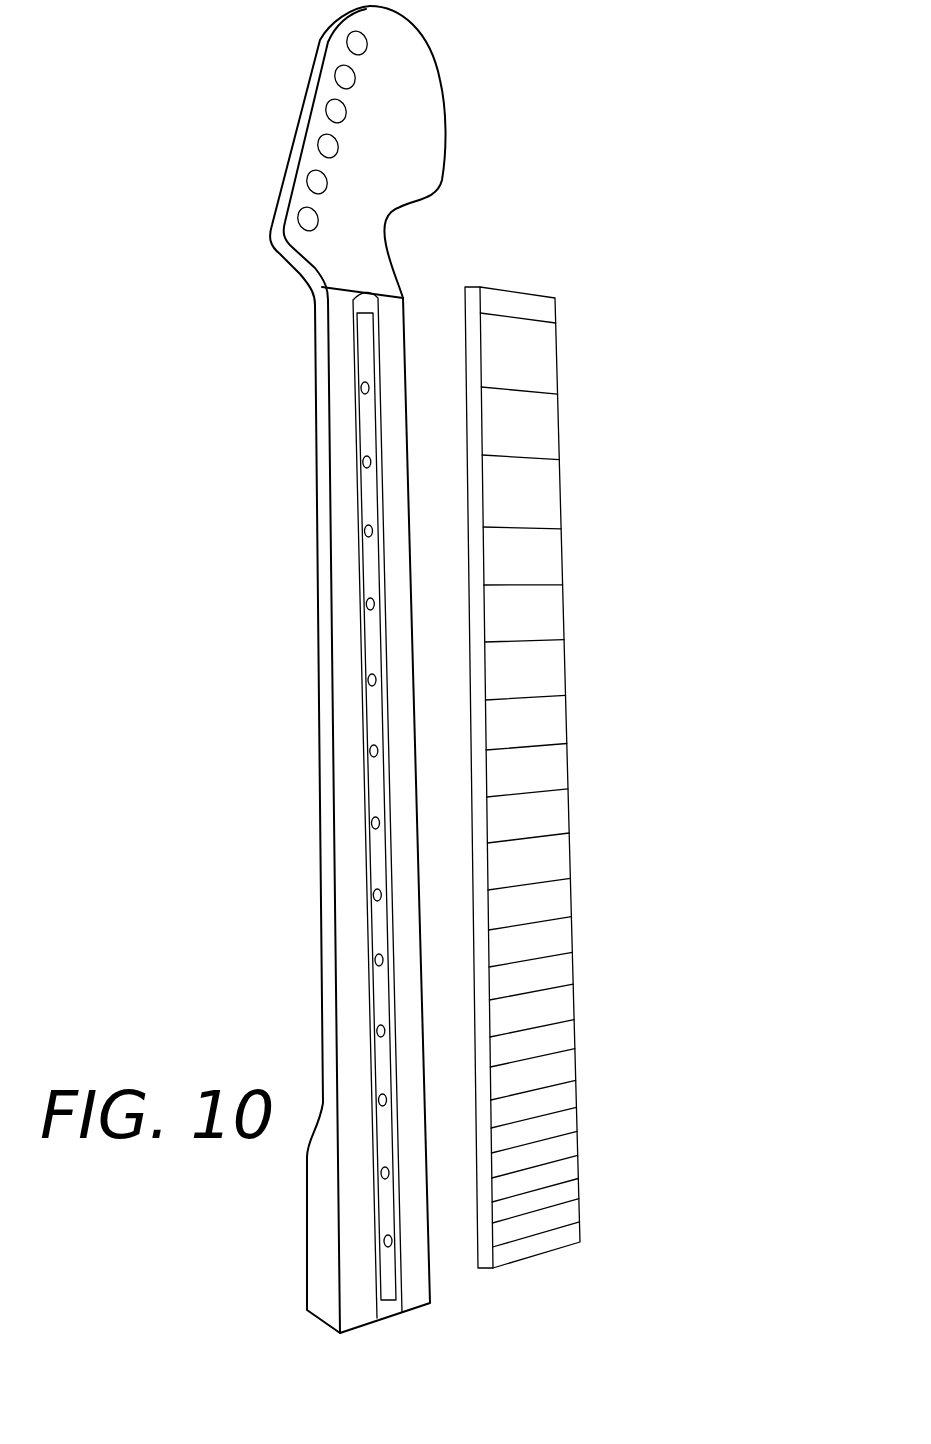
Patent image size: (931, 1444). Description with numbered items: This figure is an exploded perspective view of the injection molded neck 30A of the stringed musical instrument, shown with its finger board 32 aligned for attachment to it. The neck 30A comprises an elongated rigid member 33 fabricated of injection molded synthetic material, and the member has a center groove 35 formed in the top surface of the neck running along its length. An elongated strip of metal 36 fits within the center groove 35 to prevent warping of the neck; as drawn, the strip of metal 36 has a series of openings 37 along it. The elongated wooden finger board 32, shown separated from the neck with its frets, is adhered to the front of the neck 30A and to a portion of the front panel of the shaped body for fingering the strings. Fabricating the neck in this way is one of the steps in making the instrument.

The neck 30A is at (465, 243).
The finger board 32 is at (560, 613).
The elongated rigid member 33 is at (323, 593).
The center groove 35 is at (363, 828).
The elongated strip of metal 36 is at (380, 1080).
The openings 37 is at (382, 1187).